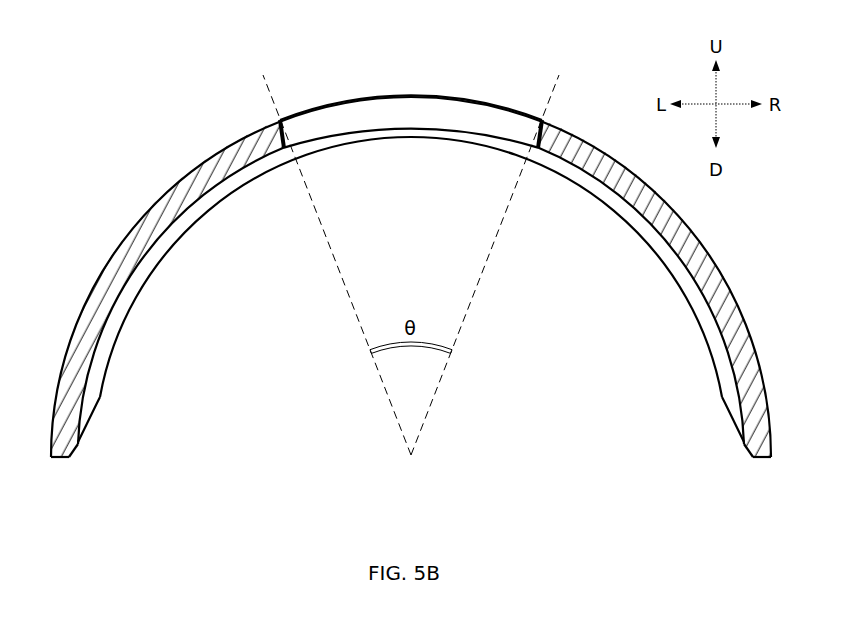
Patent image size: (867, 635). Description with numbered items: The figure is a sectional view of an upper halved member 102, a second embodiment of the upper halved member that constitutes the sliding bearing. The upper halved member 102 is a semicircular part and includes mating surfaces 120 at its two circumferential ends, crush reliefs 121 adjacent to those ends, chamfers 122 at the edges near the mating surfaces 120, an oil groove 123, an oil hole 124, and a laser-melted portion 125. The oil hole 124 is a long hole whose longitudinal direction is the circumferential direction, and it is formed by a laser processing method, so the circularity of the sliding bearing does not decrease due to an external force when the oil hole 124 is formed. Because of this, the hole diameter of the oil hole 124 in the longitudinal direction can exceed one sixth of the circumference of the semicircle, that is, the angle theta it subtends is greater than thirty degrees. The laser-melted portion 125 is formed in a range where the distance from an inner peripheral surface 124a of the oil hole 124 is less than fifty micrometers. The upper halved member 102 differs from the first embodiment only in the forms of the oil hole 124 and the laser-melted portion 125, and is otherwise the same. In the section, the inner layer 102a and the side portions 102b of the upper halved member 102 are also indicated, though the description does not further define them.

The upper halved member 102 is at (176, 172).
The inner layer of shell 102a is at (452, 145).
The side portion of shell 102b is at (590, 140).
The mating surface 120 is at (58, 460).
The crush relief 121 is at (88, 420).
The chamfer 122 is at (75, 452).
The oil groove 123 is at (222, 180).
The oil hole 124 is at (408, 108).
The inner peripheral surface of the oil hole 124a is at (288, 143).
The laser-melted portion 125 is at (543, 128).